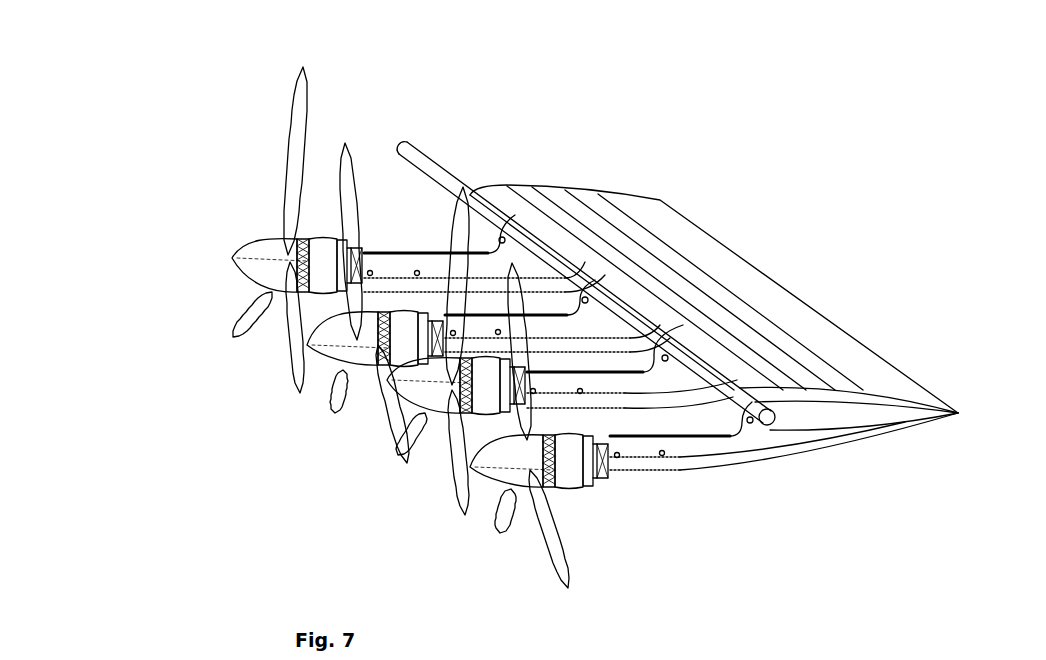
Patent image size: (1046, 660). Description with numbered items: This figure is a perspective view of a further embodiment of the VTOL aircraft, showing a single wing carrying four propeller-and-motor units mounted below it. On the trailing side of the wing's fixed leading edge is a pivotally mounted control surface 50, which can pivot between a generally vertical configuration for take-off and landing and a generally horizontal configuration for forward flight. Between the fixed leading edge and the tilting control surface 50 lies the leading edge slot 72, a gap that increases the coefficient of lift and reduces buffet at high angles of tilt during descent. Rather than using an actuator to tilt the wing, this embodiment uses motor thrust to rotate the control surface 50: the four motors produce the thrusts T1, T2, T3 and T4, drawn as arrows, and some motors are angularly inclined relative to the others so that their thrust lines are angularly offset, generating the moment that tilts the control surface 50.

The control surface 50 is at (742, 282).
The leading edge slot 72 is at (777, 343).
The thrust of prop and motor 1 T1 is at (470, 467).
The thrust of prop and motor 2 T2 is at (387, 380).
The thrust of prop and motor 3 T3 is at (307, 345).
The thrust of prop and motor 4 T4 is at (232, 258).